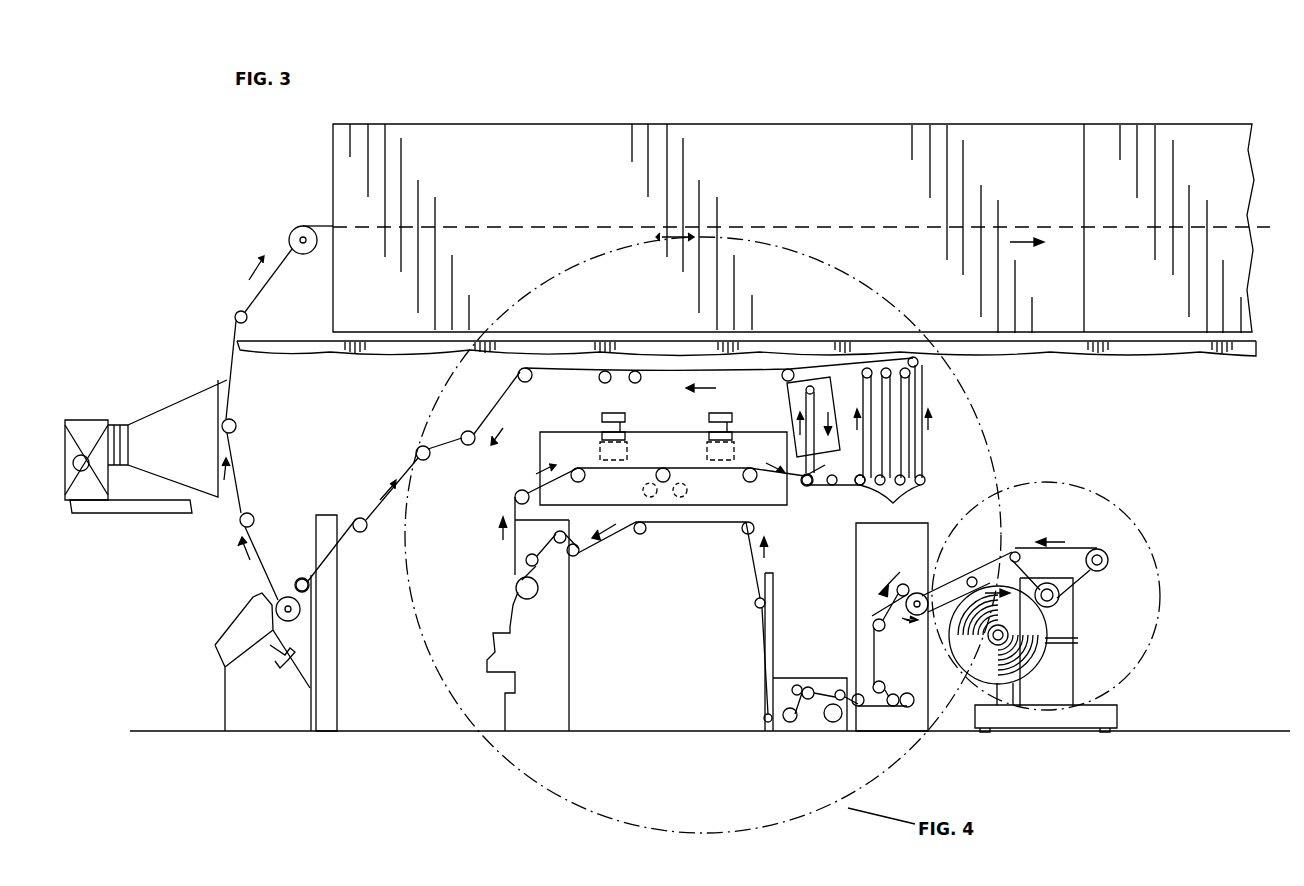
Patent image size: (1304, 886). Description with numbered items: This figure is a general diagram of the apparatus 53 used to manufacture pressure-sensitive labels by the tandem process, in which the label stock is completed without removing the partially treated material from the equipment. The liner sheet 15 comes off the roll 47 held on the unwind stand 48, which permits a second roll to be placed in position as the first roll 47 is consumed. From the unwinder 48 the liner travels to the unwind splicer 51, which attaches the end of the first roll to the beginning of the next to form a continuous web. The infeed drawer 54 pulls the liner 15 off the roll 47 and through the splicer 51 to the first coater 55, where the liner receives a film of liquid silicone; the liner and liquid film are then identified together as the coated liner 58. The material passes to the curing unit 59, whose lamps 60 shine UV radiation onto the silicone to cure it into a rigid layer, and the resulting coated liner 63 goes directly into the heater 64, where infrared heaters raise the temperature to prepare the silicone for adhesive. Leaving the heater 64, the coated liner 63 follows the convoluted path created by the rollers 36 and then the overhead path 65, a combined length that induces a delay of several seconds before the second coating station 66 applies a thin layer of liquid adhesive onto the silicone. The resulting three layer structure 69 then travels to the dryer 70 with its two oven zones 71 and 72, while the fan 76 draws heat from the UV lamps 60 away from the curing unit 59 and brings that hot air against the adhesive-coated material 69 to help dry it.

The liner sheet 15 is at (664, 530).
The rollers 36 is at (905, 368).
The roll 47 is at (993, 676).
The unwind stand 48 is at (1068, 666).
The unwind splicer 51 is at (870, 552).
The apparatus 53 is at (255, 214).
The infeed drawer 54 is at (770, 697).
The #1 coater 55 is at (558, 650).
The silicone-coated liner 58 is at (515, 568).
The curing unit 59 is at (663, 432).
The lamps 60 is at (600, 444).
The coated liner 63 is at (800, 487).
The heater 64 is at (815, 385).
The overhead path 65 is at (566, 375).
The second coating station 66 is at (300, 622).
The three layer structure 69 is at (235, 468).
The dryer 70 is at (926, 91).
The first oven zone 71 is at (468, 146).
The second oven zone 72 is at (1165, 134).
The fan 76 is at (145, 432).